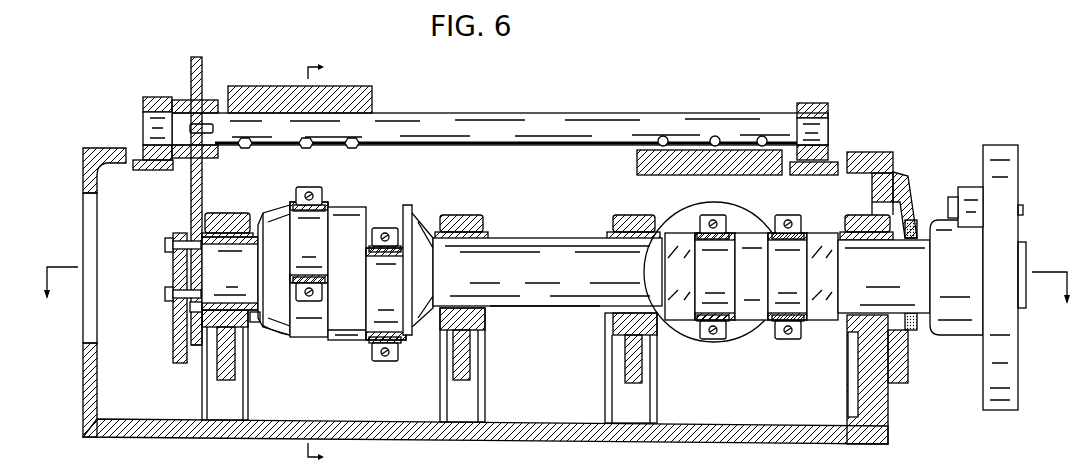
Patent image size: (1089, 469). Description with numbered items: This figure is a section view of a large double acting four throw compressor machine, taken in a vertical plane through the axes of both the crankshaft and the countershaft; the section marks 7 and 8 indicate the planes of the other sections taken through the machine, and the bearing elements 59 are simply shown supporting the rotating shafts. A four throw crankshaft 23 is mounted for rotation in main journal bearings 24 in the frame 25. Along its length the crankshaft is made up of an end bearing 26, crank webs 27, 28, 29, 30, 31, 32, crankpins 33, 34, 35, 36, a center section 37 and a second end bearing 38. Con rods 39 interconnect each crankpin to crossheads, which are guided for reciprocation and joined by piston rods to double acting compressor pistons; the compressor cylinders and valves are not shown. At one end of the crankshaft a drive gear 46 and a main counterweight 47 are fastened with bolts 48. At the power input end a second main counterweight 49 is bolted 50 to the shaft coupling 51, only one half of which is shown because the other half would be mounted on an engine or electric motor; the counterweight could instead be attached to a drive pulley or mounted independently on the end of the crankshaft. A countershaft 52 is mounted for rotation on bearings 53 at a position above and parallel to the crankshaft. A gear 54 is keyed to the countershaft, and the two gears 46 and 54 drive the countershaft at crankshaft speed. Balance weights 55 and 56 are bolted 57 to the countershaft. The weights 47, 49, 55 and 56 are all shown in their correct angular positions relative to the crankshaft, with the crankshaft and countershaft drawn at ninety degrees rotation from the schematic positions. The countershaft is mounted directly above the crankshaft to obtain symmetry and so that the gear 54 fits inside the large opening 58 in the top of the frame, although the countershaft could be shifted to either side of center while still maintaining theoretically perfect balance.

The section line 7- 7 is at (556, 300).
The section line 8- 8 is at (325, 262).
The four throw crankshaft 23 is at (545, 322).
The main journal bearings 24 is at (254, 322).
The frame 25 is at (892, 428).
The end bearing 26 is at (230, 273).
The crank web 27 is at (277, 212).
The crank web 28 is at (343, 341).
The crank web 29 is at (410, 207).
The crank web 30 is at (671, 322).
The crank web 31 is at (753, 322).
The crank web 32 is at (823, 322).
The crankpin 33 is at (309, 269).
The crankpin 34 is at (386, 294).
The crankpin 35 is at (714, 272).
The crankpin 36 is at (787, 276).
The center section 37 is at (525, 258).
The end bearing 38 is at (884, 276).
The con rods 39 is at (309, 186).
The drive gear 46 is at (193, 347).
The main counterweight 47 is at (173, 352).
The bolts 48 is at (165, 245).
The second main counterweight 49 is at (972, 195).
The bolt 50 is at (950, 206).
The shaft coupling 51 is at (996, 152).
The countershaft 52 is at (560, 126).
The bearings 53 is at (157, 97).
The gear 54 is at (203, 71).
The balance weight 55 is at (372, 94).
The balance weight 56 is at (637, 165).
The bolts 57 is at (359, 148).
The large opening 58 is at (133, 152).
The bearing 59 is at (230, 214).